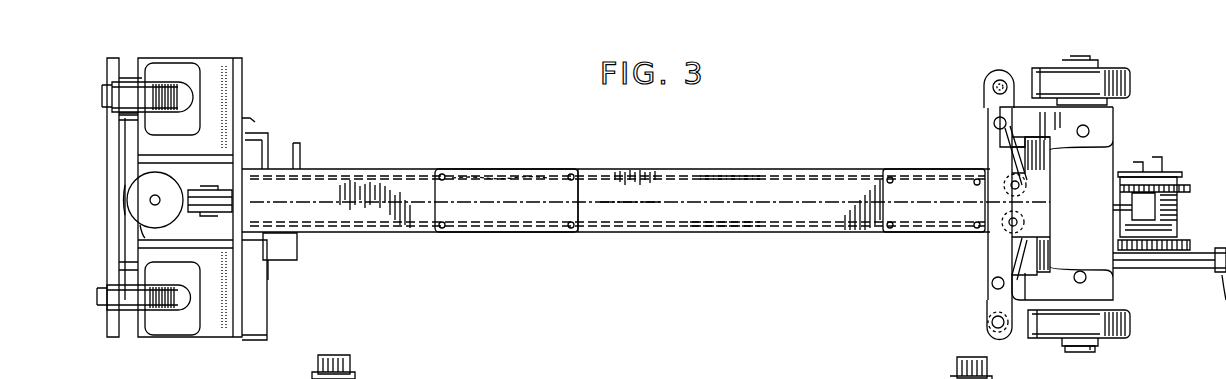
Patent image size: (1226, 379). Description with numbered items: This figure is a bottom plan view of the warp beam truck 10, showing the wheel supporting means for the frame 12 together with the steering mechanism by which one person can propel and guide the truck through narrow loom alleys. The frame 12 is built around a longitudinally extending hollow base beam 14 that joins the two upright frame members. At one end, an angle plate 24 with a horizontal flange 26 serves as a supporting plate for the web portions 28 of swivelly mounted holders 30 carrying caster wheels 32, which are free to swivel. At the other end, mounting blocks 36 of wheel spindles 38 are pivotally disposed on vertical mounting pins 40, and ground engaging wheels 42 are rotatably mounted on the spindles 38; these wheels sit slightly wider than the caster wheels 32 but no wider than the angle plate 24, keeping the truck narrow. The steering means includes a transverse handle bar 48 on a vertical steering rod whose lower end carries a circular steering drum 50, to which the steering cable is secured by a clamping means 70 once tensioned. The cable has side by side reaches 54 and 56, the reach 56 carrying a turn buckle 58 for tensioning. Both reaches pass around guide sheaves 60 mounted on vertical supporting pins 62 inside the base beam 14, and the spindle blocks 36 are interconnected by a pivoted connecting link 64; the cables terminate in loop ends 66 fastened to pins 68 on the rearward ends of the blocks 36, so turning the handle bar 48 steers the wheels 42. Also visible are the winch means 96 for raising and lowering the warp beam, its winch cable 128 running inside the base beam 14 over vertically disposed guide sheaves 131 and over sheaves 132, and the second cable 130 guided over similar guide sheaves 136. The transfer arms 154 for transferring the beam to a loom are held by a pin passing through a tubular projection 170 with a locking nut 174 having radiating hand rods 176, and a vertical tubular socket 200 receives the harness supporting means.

The warp beam truck 10 is at (638, 158).
The frame 12 is at (752, 240).
The base beam 14 is at (590, 234).
The angle plate 24 is at (258, 122).
The horizontal flange 26 is at (218, 98).
The web portions 28 is at (190, 95).
The holders 30 is at (118, 128).
The caster wheels 32 is at (103, 95).
The mounting blocks 36 is at (1105, 118).
The wheel spindles 38 is at (1078, 350).
The vertical mounting pins 40 is at (1090, 130).
The ground engaging wheels 42 is at (1130, 85).
The handle bar 48 is at (110, 145).
The steering drum 50 is at (140, 202).
The cable reach 54 is at (710, 218).
The cable reach 56 is at (715, 185).
The turn buckle 58 is at (515, 172).
The guide sheaves 60 is at (990, 237).
The vertical supporting pins 62 is at (1010, 175).
The connecting link 64 is at (1000, 143).
The loop ends 66 is at (987, 308).
The pins 68 is at (988, 330).
The clamping means 70 is at (118, 193).
The winch means 96 is at (1172, 155).
The winch cable 128 is at (610, 205).
The winch cable 130 is at (1000, 378).
The guide sheaves 131 is at (187, 251).
The sheaves 132 is at (336, 352).
The guide sheaves 136 is at (967, 356).
The transfer arms 154 is at (298, 296).
The tubular projection 170 is at (1165, 262).
The locking nut 174 is at (1215, 285).
The hand rods 176 is at (1225, 320).
The tubular socket 200 is at (915, 378).